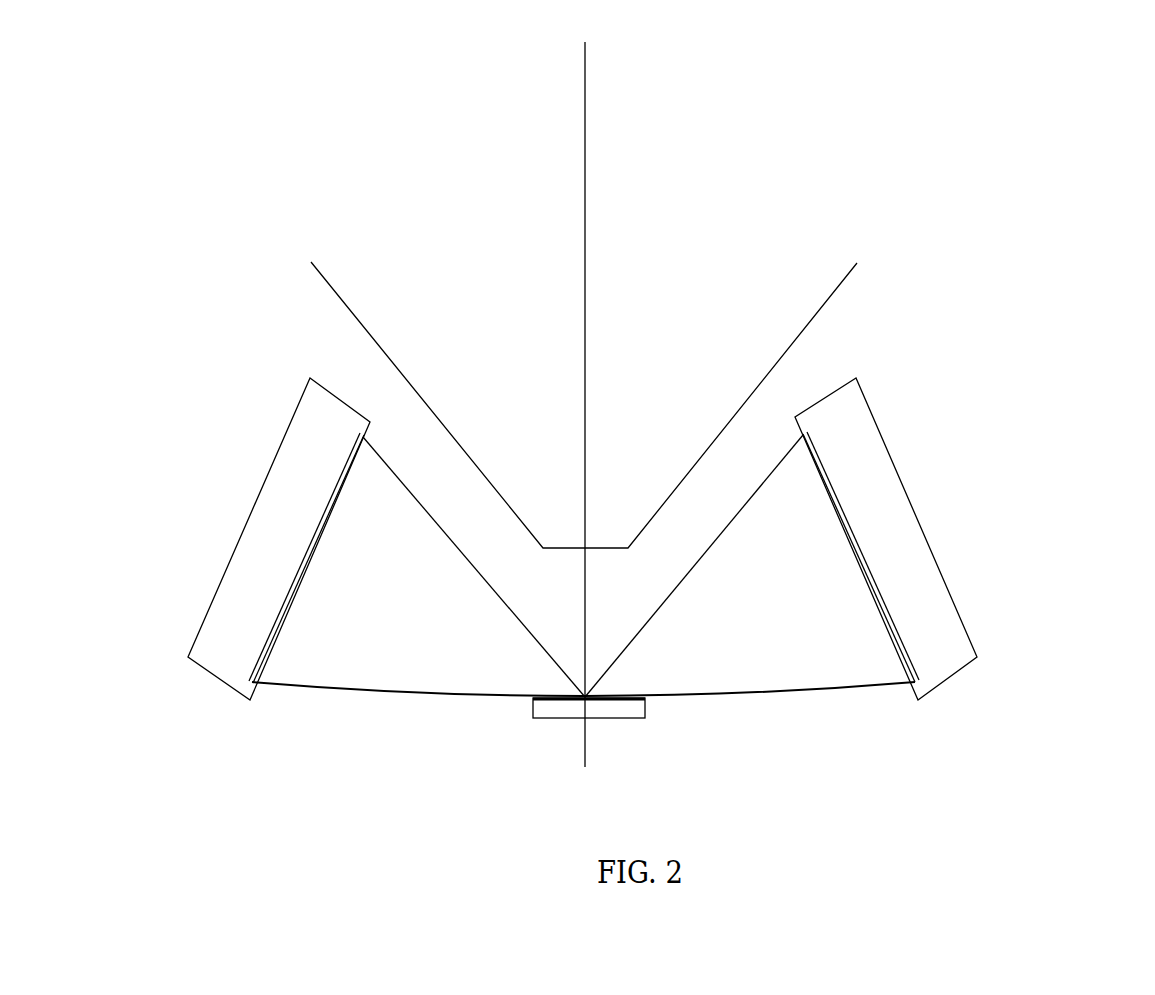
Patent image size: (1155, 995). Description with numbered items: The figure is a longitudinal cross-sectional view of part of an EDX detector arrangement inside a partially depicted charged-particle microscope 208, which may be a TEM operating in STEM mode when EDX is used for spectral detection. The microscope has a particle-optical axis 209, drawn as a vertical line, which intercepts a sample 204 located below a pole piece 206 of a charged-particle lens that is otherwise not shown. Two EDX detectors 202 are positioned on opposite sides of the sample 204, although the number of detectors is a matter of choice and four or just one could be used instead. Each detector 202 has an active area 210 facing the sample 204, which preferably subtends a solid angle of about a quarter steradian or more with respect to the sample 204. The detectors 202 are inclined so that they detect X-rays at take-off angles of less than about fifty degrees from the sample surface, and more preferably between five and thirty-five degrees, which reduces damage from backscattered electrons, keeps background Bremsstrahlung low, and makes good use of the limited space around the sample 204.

The EDX detector 202 is at (220, 577).
The sample 204 is at (622, 718).
The pole piece 206 is at (840, 283).
The charged-particle microscope 208 is at (973, 163).
The particle-optical axis 209 is at (585, 165).
The active area 210 is at (320, 512).